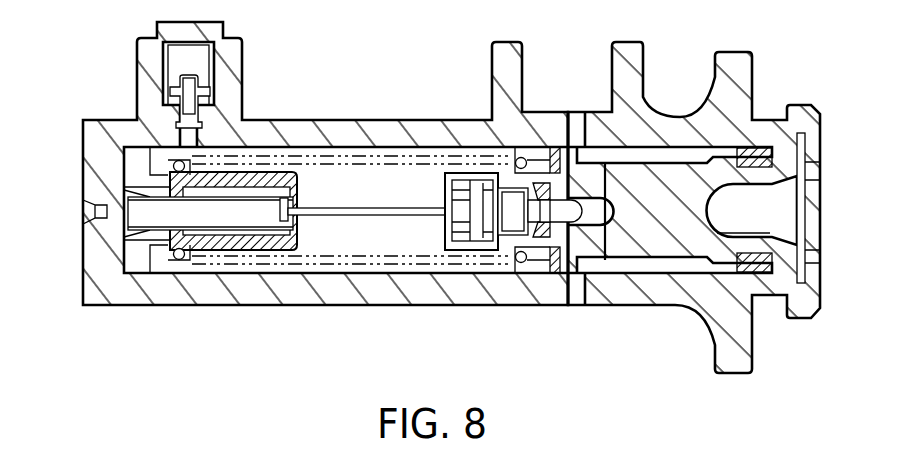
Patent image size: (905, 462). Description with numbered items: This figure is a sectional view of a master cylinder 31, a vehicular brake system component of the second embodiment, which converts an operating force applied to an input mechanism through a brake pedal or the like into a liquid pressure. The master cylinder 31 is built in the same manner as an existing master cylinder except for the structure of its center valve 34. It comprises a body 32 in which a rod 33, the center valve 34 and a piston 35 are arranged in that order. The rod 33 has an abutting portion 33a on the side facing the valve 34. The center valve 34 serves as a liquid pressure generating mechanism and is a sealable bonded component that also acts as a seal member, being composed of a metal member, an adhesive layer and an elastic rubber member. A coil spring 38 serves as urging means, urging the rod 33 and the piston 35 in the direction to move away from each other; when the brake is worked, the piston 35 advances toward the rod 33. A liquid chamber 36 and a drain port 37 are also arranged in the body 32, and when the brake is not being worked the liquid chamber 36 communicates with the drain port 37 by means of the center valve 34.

The master cylinder 31 is at (435, 70).
The body 32 is at (305, 128).
The rod 33 is at (322, 220).
The abutting portion 33a is at (517, 232).
The center valve 34 is at (553, 262).
The piston 35 is at (653, 247).
The liquid chamber 36 is at (401, 245).
The drain port 37 is at (584, 217).
The coil spring 38 is at (249, 268).